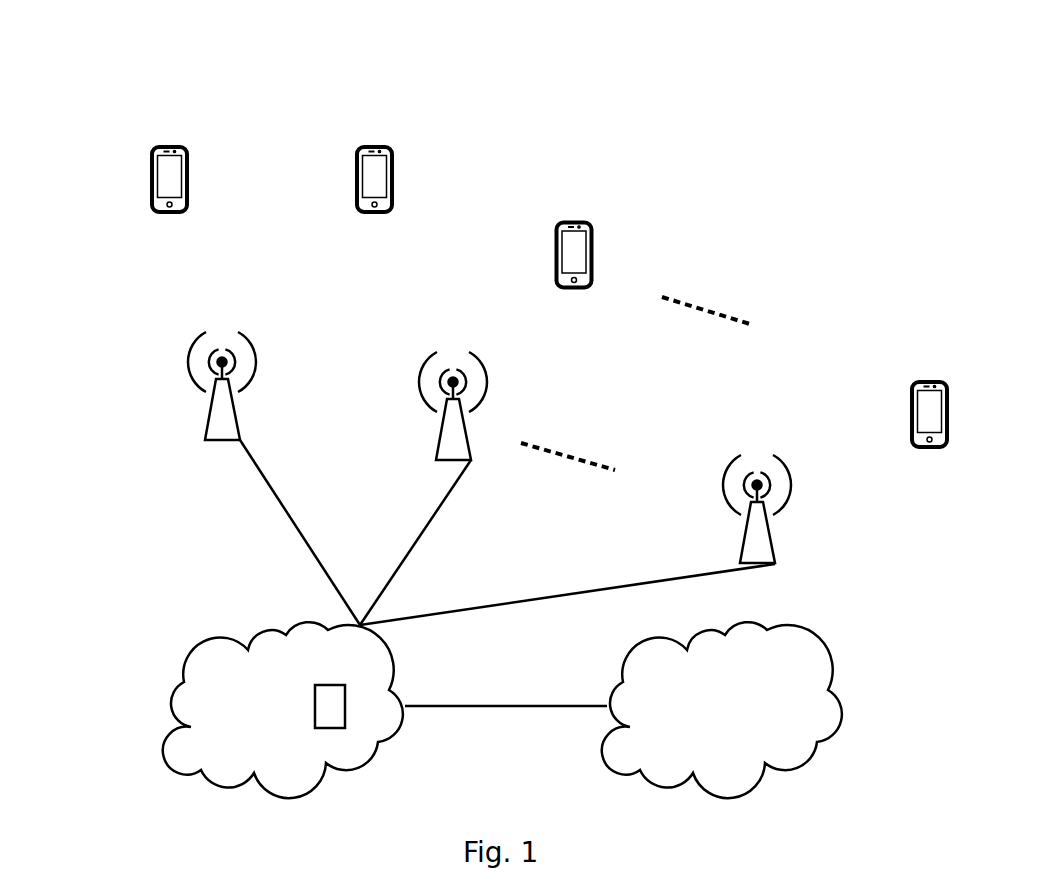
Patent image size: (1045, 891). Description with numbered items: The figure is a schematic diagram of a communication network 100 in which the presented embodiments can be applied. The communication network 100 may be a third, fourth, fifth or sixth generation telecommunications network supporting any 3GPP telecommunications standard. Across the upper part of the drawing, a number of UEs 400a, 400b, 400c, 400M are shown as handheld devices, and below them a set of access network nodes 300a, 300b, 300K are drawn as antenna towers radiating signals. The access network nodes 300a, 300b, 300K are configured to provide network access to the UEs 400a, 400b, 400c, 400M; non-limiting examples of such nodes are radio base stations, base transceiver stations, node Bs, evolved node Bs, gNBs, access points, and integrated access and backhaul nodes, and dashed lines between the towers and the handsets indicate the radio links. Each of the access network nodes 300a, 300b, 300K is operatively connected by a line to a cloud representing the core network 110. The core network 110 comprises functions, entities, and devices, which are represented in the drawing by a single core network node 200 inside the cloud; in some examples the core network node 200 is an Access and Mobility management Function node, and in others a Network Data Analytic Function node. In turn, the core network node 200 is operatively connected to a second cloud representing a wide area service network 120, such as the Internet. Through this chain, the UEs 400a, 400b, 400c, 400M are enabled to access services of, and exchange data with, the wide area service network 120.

The communication network 100 is at (216, 89).
The core network 110 is at (326, 668).
The wide area service network 120 is at (748, 725).
The core network node 200 is at (315, 712).
The access network node 300a is at (207, 428).
The access network node 300b is at (437, 449).
The access network node 300K is at (743, 552).
The UE 400a is at (152, 190).
The UE 400b is at (357, 188).
The UE 400c is at (556, 264).
The UE 400M is at (912, 423).